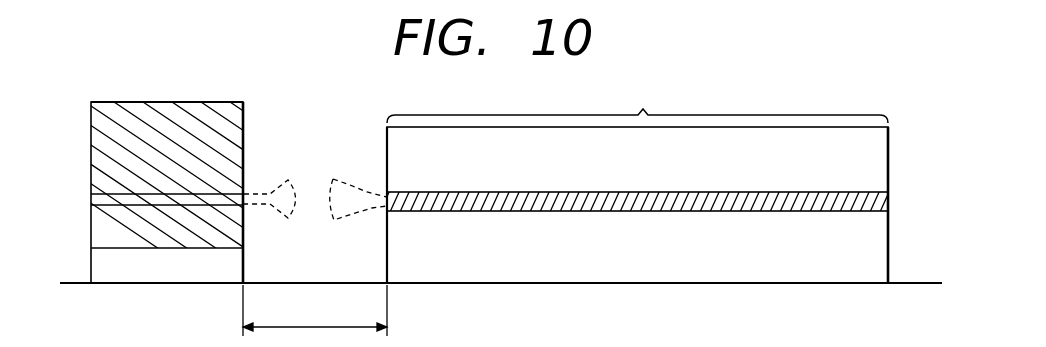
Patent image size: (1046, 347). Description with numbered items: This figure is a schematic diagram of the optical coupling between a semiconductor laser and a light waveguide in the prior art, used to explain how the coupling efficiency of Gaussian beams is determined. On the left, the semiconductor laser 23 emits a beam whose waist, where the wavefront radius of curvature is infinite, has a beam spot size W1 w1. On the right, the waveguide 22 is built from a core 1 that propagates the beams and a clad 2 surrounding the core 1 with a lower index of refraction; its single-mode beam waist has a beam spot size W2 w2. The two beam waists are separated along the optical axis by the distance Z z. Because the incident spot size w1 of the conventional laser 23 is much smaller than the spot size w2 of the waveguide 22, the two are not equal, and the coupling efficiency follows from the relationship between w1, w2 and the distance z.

The semiconductor laser 23 is at (176, 113).
The beam spot size W1 w1 is at (247, 195).
The beam spot size W2 w2 is at (385, 195).
The waveguide 22 is at (637, 104).
The core 1 is at (625, 202).
The clad 2 is at (742, 272).
The distance Z between beam waists z is at (315, 310).